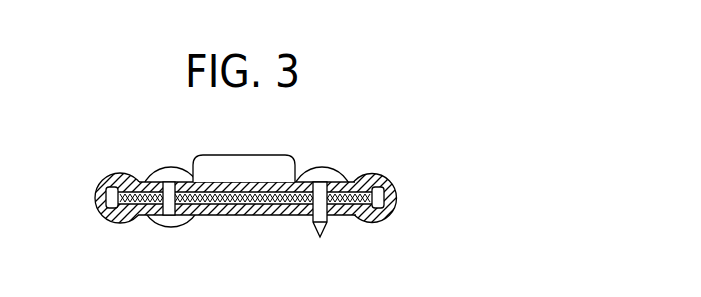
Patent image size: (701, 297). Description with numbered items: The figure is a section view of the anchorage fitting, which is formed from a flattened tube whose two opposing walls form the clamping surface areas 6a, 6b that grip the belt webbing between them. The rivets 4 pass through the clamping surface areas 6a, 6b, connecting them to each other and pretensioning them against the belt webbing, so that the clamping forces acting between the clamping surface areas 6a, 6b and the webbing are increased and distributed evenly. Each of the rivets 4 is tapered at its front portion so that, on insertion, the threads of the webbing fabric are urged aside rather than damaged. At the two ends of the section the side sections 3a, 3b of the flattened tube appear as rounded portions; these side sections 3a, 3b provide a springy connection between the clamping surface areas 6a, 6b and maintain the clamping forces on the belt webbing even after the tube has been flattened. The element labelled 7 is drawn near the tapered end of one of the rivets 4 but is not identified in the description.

The side section 3a is at (95, 198).
The side section 3b is at (396, 197).
The rivets 4 is at (163, 171).
The clamping surface area 6a is at (244, 191).
The clamping surface area 6b is at (237, 206).
The pin 7 is at (346, 215).